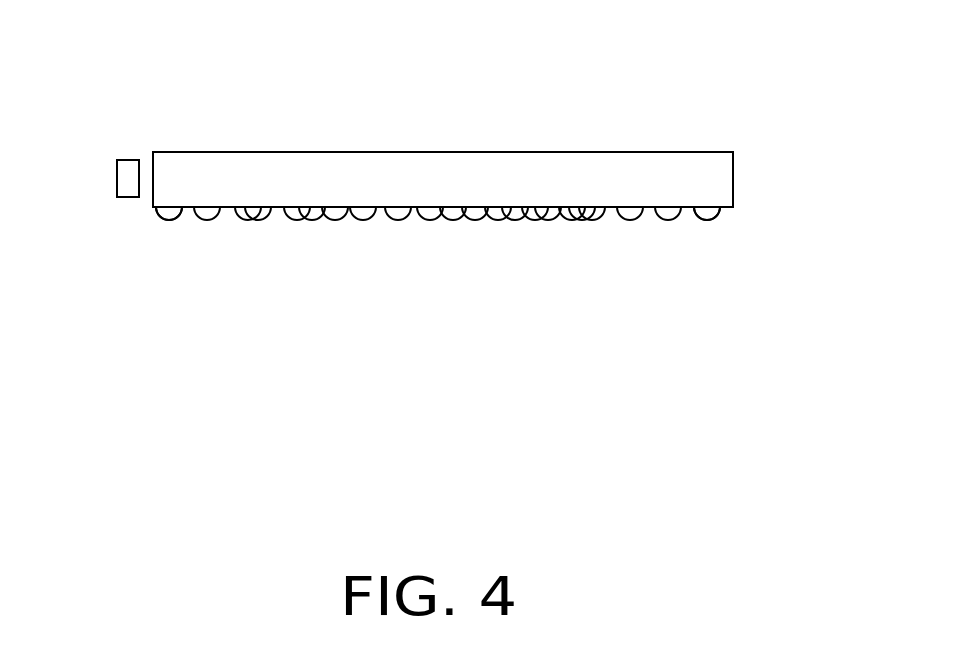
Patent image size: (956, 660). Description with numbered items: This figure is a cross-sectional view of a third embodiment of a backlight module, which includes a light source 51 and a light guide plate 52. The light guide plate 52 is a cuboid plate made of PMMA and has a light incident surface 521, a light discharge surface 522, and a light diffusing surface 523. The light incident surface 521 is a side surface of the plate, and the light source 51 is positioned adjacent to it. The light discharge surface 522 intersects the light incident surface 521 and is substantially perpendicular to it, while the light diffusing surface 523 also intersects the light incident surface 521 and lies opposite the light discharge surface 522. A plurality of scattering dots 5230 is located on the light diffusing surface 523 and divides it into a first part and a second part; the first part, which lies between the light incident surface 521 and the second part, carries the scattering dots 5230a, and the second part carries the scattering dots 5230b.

The light source 51 is at (127, 175).
The light guide plate 52 is at (713, 180).
The light incident surface 521 is at (152, 156).
The light discharge surface 522 is at (606, 152).
The light diffusing surface 523 is at (501, 231).
The scattering dots 5230 is at (727, 294).
The scattering dots 5230a is at (172, 212).
The scattering dots 5230b is at (707, 213).